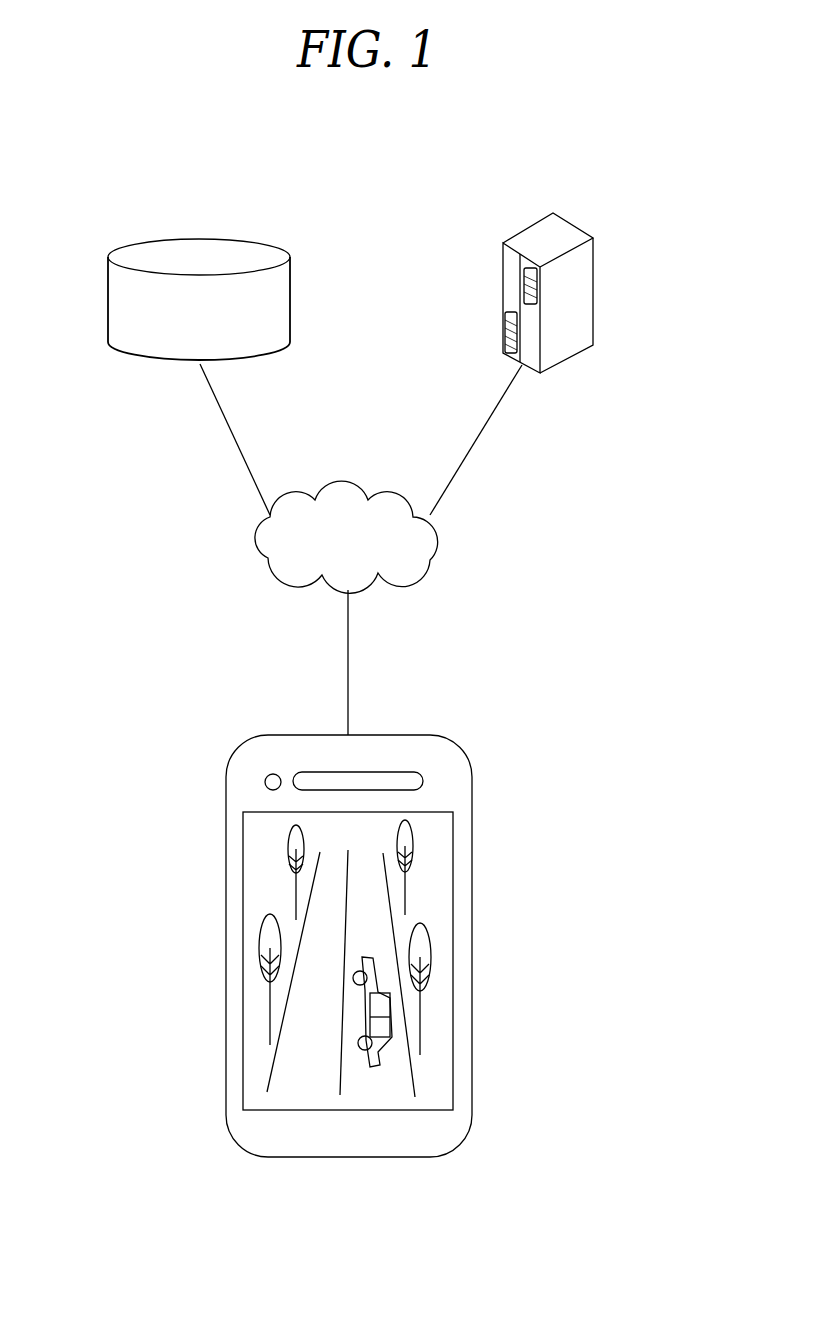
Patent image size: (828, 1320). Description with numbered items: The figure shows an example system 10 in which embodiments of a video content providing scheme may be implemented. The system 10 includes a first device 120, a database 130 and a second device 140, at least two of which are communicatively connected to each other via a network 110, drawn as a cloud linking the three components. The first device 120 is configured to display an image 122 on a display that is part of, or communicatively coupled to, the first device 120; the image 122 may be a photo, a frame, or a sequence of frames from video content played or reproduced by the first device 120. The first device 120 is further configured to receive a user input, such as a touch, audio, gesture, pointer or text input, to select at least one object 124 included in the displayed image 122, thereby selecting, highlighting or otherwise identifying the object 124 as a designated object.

The system 10 is at (382, 142).
The network 110 is at (397, 496).
The first device 120 is at (412, 736).
The image 122 is at (243, 885).
The object 124 is at (375, 1050).
The database 130 is at (196, 242).
The second device 140 is at (575, 223).